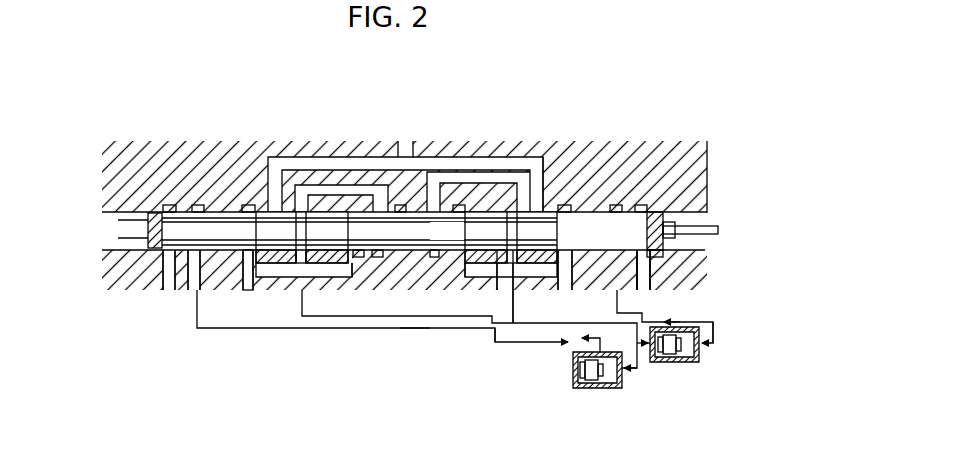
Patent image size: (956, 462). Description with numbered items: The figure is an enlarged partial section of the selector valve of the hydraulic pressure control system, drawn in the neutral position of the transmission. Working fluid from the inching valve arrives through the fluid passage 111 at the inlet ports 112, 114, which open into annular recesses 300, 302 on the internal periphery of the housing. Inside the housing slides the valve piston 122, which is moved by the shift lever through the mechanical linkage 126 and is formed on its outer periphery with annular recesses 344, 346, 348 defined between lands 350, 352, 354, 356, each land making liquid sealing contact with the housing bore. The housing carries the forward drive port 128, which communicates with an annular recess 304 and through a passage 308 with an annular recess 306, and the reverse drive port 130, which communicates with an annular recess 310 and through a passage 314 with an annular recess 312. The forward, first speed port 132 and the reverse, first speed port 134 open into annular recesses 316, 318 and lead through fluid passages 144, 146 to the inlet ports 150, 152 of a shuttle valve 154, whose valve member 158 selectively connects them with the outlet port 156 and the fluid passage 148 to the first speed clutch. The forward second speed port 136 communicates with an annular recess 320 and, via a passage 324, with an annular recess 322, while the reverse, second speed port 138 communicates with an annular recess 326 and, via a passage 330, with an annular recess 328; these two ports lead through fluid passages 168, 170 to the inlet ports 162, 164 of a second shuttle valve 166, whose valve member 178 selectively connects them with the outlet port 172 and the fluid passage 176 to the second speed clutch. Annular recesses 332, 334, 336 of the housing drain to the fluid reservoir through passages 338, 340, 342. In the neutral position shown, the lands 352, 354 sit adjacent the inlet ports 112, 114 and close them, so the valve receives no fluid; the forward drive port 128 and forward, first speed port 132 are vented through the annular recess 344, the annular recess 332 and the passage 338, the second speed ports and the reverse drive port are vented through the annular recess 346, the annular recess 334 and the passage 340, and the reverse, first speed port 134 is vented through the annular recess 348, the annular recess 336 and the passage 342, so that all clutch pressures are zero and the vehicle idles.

The fluid passage 111 is at (406, 152).
The inlet port 112 is at (248, 205).
The inlet port 114 is at (585, 210).
The valve piston 122 is at (655, 170).
The mechanical linkage 126 is at (712, 210).
The forward drive port 128 is at (247, 268).
The reverse drive port 130 is at (565, 290).
The forward, first speed port 132 is at (199, 262).
The reverse, first speed port 134 is at (643, 282).
The forward second speed port 136 is at (304, 296).
The reverse, second speed port 138 is at (506, 286).
The fluid passage 144 is at (350, 330).
The fluid passage 146 is at (714, 343).
The fluid passage 148 is at (642, 318).
The inlet port 150 is at (656, 348).
The inlet port 152 is at (699, 350).
The shuttle valve 154 is at (684, 360).
The outlet port 156 is at (700, 330).
The valve member 158 is at (672, 360).
The inlet port 162 is at (576, 372).
The inlet port 164 is at (624, 372).
The shuttle valve 166 is at (608, 386).
The fluid passage 168 is at (418, 330).
The fluid passage 170 is at (512, 325).
The outlet port 172 is at (582, 354).
The fluid passage 176 is at (590, 339).
The valve member 178 is at (596, 380).
The annular recess 300 is at (297, 262).
The annular recess 302 is at (512, 264).
The annular recess 304 is at (198, 205).
The annular recess 306 is at (350, 200).
The passage 308 is at (372, 262).
The annular recess 310 is at (616, 205).
The annular recess 312 is at (488, 222).
The passage 314 is at (470, 264).
The annular recess 316 is at (170, 205).
The annular recess 318 is at (655, 190).
The annular recess 320 is at (301, 206).
The annular recess 322 is at (393, 262).
The passage 324 is at (316, 157).
The annular recess 326 is at (562, 205).
The annular recess 328 is at (430, 260).
The passage 330 is at (452, 186).
The annular recess 332 is at (165, 223).
The annular recess 334 is at (399, 205).
The annular recess 336 is at (718, 231).
The passage 338 is at (178, 260).
The passage 340 is at (418, 222).
The passage 342 is at (660, 258).
The annular recess 344 is at (216, 262).
The annular recess 346 is at (372, 206).
The annular recess 348 is at (641, 205).
The land 350 is at (150, 248).
The land 352 is at (303, 264).
The land 354 is at (514, 165).
The land 356 is at (663, 242).